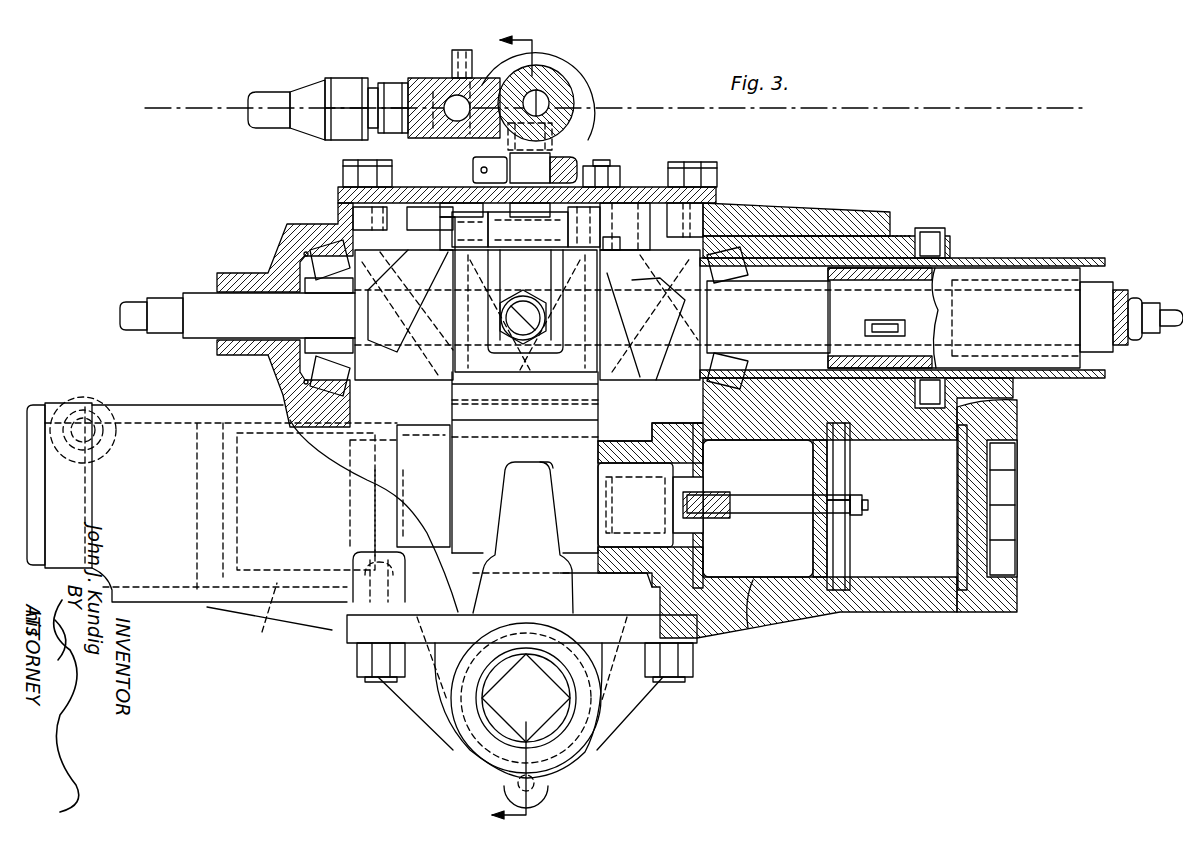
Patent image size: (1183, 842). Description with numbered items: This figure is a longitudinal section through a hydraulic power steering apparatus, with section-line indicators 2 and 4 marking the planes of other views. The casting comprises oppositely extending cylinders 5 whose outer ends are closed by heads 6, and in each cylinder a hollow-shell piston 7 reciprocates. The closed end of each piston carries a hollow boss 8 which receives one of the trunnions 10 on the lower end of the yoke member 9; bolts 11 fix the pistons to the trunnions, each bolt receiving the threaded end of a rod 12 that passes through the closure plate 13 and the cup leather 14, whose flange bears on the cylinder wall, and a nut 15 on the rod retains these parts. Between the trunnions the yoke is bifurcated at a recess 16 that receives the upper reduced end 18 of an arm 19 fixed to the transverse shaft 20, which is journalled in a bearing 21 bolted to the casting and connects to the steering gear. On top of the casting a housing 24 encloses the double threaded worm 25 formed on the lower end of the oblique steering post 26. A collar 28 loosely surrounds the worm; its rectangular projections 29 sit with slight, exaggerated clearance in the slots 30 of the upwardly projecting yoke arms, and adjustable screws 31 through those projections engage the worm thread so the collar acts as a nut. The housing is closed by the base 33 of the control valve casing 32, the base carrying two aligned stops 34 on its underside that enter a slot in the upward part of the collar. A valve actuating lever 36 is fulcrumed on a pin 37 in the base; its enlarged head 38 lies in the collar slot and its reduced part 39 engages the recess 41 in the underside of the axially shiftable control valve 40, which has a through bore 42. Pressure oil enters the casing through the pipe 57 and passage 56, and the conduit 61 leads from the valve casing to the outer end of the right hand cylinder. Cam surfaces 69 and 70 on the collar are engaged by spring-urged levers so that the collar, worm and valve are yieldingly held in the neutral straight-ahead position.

The section line 2- 2 is at (145, 126).
The section line 4- 4 is at (535, 433).
The cylinders 5 is at (152, 595).
The heads 6 is at (36, 523).
The piston 7 is at (506, 616).
The hollow boss 8 is at (428, 452).
The yoke member 9 is at (493, 452).
The trunnions 10 is at (406, 470).
The bolts 11 is at (703, 491).
The rod 12 is at (796, 508).
The closure plate 13 is at (822, 558).
The cup leather 14 is at (850, 452).
The nut 15 is at (863, 515).
The recess 16 is at (553, 468).
The upper reduced end 18 is at (523, 537).
The arm 19 is at (556, 599).
The shaft 20 is at (526, 715).
The bearing 21 is at (597, 726).
The housing 24 is at (787, 214).
The worm 25 is at (427, 295).
The steering post 26 is at (1120, 373).
The collar 28 is at (462, 268).
The rectangular projections 29 is at (503, 285).
The slots 30 is at (500, 353).
The adjustable screws 31 is at (527, 323).
The control valve casing 32 is at (562, 78).
The base 33 is at (416, 196).
The stops 34 is at (628, 206).
The valve actuating lever 36 is at (530, 170).
The pin 37 is at (566, 168).
The enlarged head 38 is at (470, 229).
The reduced part 39 is at (487, 157).
The control valve 40 is at (458, 70).
The recess 41 is at (574, 130).
The bore 42 is at (549, 103).
The passage 56 is at (420, 136).
The pipe 57 is at (272, 94).
The conduit 61 is at (103, 420).
The cam surfaces 69 is at (600, 228).
The cam surfaces 70 is at (452, 240).